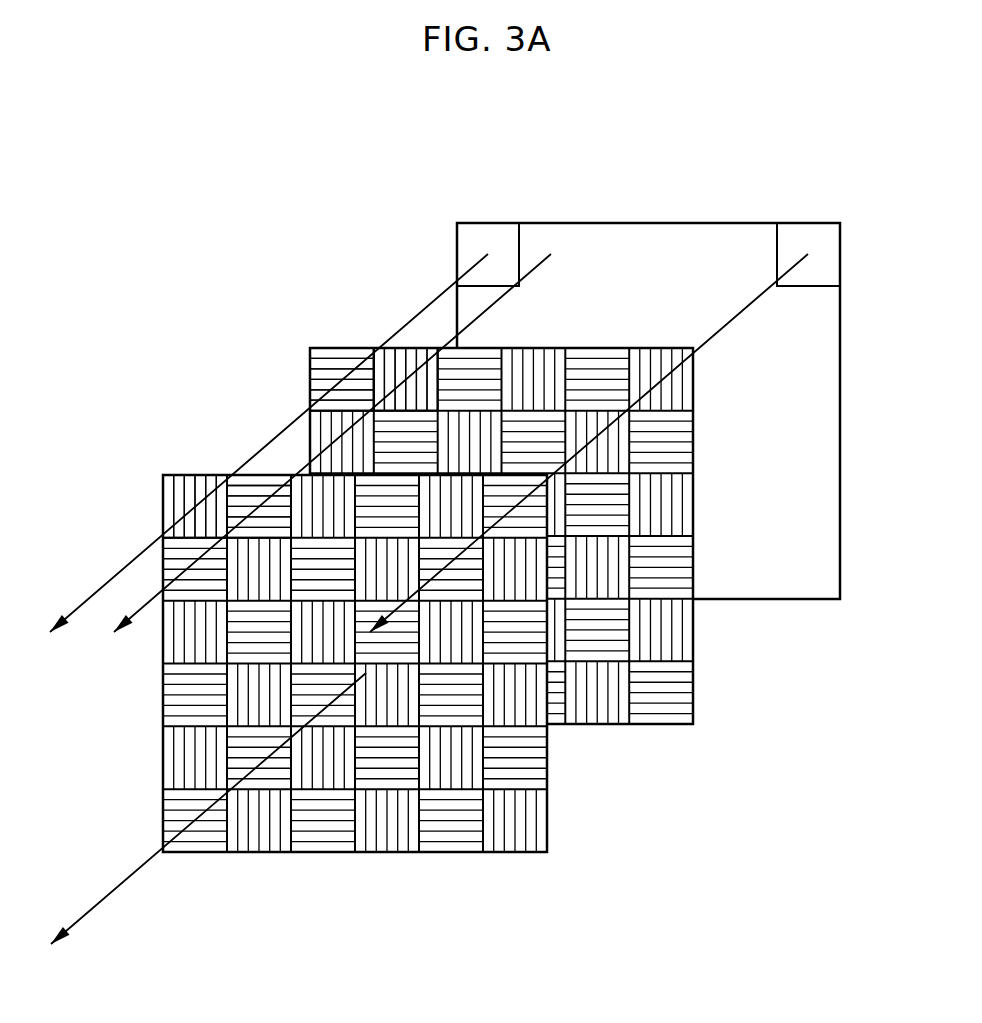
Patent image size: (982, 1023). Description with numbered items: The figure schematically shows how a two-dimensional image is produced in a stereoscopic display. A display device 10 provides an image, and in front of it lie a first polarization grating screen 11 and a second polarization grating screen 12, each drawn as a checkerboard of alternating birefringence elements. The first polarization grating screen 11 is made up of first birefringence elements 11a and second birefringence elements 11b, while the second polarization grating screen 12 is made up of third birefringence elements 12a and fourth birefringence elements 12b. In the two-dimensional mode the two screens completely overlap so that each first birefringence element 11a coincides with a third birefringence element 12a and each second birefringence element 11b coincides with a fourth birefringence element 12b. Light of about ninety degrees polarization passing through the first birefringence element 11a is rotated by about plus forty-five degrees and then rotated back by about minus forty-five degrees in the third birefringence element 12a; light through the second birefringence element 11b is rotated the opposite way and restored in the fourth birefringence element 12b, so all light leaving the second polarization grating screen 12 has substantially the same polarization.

The display device 10 is at (841, 502).
The first polarization grating screen 11 is at (525, 500).
The first birefringence element 11a is at (336, 358).
The second birefringence element 11b is at (412, 360).
The second polarization grating screen 12 is at (377, 626).
The third birefringence element 12a is at (186, 480).
The fourth birefringence element 12b is at (264, 486).